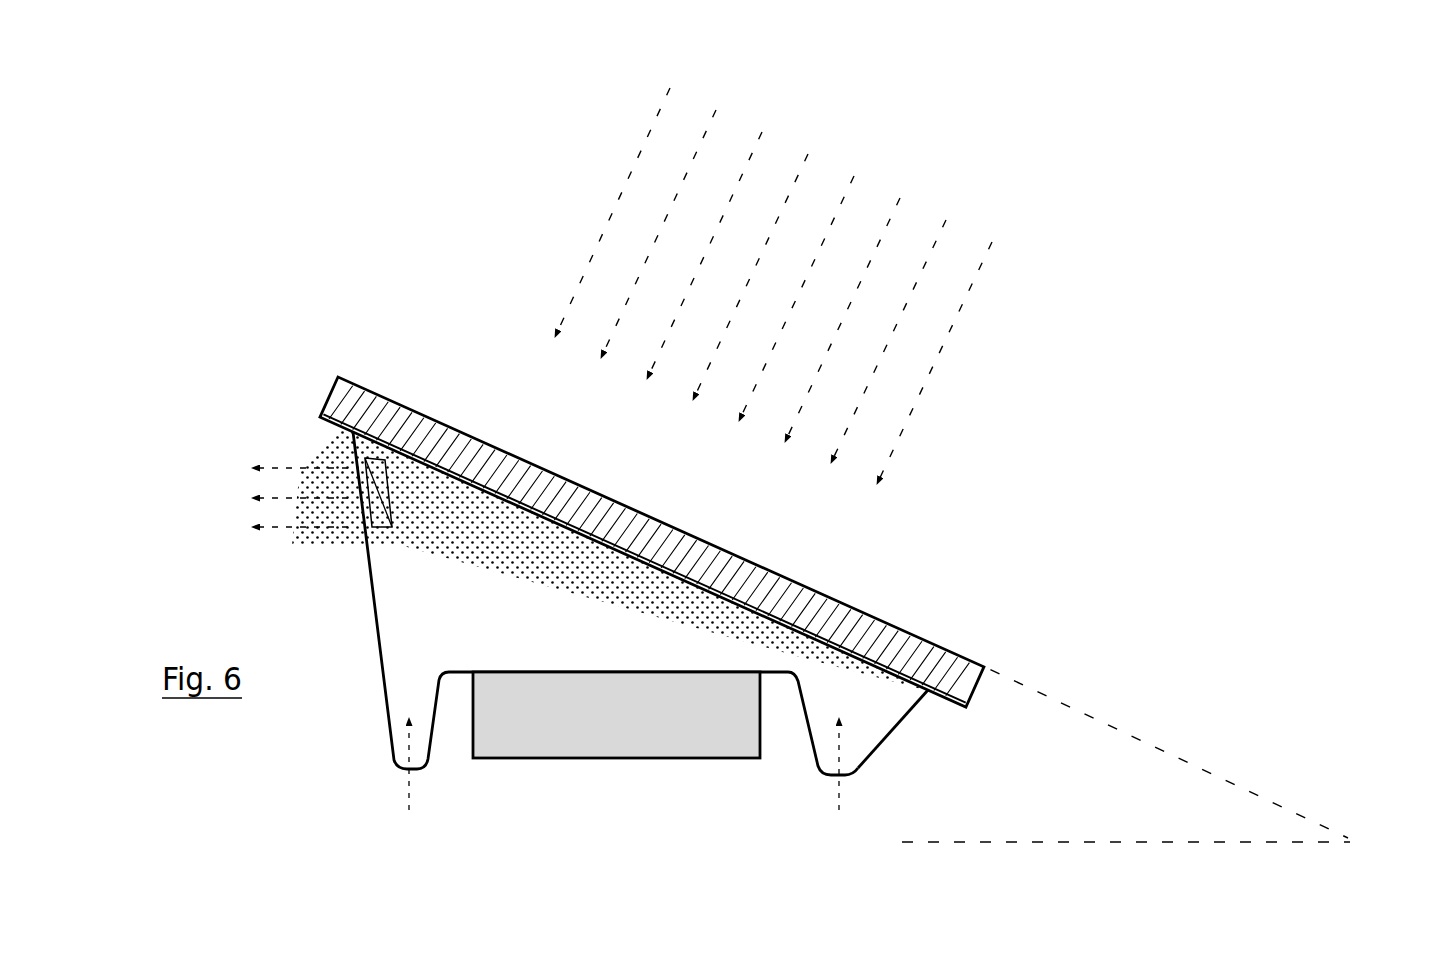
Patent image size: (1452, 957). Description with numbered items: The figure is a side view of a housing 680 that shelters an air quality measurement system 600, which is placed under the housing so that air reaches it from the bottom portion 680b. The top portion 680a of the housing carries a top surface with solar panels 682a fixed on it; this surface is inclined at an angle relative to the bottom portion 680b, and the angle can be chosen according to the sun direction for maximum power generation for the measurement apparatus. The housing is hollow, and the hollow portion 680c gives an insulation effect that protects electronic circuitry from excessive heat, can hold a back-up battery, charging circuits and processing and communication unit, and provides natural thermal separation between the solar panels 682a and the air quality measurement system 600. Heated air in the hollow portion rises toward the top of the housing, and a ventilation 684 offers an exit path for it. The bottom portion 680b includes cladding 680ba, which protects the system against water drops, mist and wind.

The air quality measurement system 600 is at (769, 466).
The housing 680 is at (605, 603).
The top portion 680a is at (415, 455).
The bottom portion 680b is at (450, 675).
The hollow portion 680c is at (750, 628).
The cladding 680ba is at (876, 751).
The solar panels 682a is at (823, 595).
The ventilation 684 is at (365, 465).